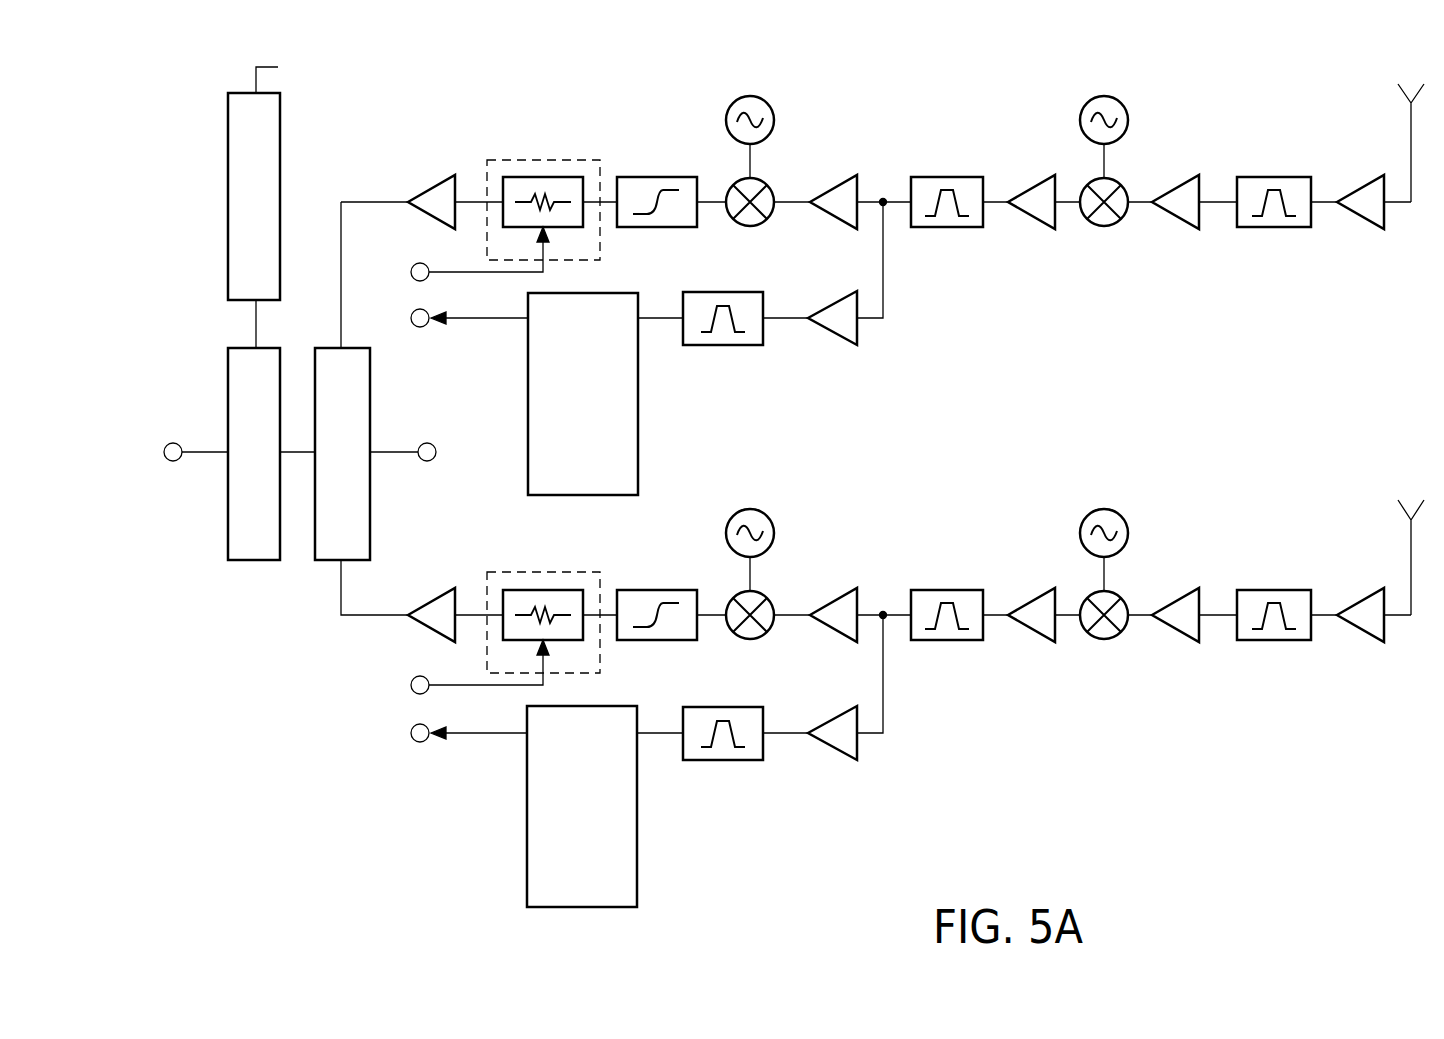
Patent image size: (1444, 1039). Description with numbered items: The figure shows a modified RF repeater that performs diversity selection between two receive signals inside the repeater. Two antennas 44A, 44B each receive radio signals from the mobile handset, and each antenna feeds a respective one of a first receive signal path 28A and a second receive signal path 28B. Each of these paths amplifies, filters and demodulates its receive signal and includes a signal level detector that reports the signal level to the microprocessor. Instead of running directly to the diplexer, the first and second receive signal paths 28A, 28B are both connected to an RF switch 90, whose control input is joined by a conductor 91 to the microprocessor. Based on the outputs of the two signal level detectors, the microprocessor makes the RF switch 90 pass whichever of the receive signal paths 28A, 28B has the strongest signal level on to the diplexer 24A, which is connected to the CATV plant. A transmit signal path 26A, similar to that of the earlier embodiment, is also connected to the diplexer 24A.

The diplexer 24A is at (255, 561).
The transmit signal path 26A is at (281, 108).
The first receive signal path 28A is at (960, 302).
The second receive signal path 28B is at (986, 698).
The antenna 44A is at (1410, 125).
The antenna 44B is at (1410, 548).
The RF switch 90 is at (371, 398).
The conductor 91 is at (385, 454).